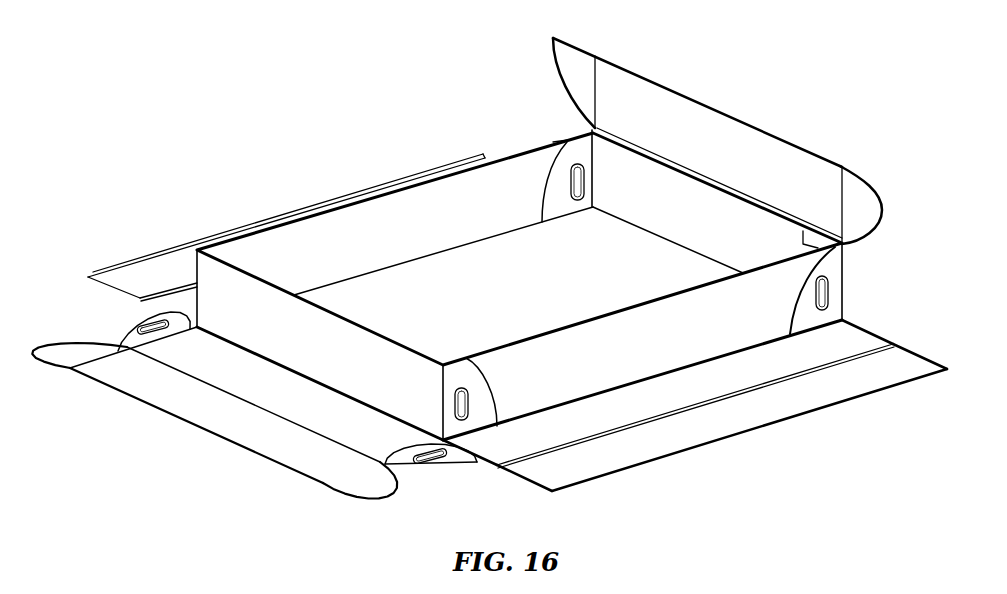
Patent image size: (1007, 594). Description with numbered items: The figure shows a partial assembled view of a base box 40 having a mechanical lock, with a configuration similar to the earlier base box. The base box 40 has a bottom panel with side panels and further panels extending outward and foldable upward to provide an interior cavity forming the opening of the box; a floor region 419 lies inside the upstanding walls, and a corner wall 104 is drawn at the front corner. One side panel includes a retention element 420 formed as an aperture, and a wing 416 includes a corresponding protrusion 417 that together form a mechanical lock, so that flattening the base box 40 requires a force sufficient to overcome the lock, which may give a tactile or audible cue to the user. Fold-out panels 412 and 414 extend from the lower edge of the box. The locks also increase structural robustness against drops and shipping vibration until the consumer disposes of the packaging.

The base box 40 is at (336, 129).
The corner wall panel 104 is at (457, 370).
The tray floor 419 is at (633, 327).
The wing 416 is at (836, 263).
The protrusion 417 is at (827, 292).
The fold-out panel 412 is at (708, 388).
The outer fold-out panel 414 is at (637, 455).
The retention element 420 is at (463, 410).